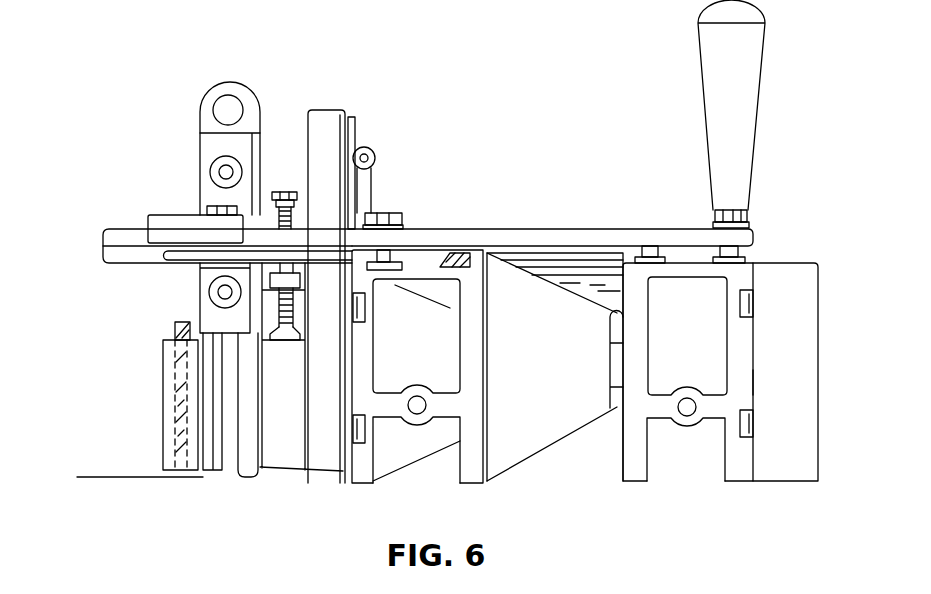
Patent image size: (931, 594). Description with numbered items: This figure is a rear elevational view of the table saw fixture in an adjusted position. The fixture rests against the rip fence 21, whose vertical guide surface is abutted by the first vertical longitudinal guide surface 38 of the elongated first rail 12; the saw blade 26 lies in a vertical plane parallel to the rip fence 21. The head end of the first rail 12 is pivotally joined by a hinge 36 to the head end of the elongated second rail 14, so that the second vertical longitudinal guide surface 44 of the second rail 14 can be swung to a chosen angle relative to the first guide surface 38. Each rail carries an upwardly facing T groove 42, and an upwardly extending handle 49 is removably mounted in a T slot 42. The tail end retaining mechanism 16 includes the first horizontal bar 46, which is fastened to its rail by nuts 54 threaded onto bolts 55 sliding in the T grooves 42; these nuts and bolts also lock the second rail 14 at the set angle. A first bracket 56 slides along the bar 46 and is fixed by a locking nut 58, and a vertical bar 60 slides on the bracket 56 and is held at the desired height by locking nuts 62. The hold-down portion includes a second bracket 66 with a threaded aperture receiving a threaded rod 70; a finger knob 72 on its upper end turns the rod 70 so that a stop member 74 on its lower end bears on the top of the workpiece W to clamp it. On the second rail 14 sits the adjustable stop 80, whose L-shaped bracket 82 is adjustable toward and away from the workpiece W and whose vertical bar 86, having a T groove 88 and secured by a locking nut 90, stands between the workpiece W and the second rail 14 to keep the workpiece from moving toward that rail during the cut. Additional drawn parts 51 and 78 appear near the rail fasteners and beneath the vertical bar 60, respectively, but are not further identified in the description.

The first rail 12 is at (692, 459).
The second rail 14 is at (527, 478).
The tail end retaining mechanism 16 is at (130, 425).
The rip fence 21 is at (798, 277).
The blade 26 is at (175, 327).
The hinge 36 is at (617, 407).
The first vertical longitudinal guide surface 38 is at (753, 381).
The T groove 42 is at (467, 260).
The second vertical longitudinal guide surface 44 is at (348, 483).
The first horizontal bar 46 is at (753, 230).
The handle 49 is at (718, 85).
The T-slot nut 51 is at (740, 255).
The nut 54 is at (400, 215).
The bolt 55 is at (382, 268).
The first bracket 56 is at (158, 222).
The locking nut 58 is at (197, 200).
The vertical bar 60 is at (218, 88).
The locking nut 62 is at (215, 165).
The second bracket 66 is at (277, 281).
The threaded rod 70 is at (283, 218).
The finger knob 72 is at (283, 190).
The stop member 74 is at (280, 340).
The guide rods 78 is at (213, 468).
The adjustable stop 80 is at (376, 246).
The L-shaped bracket 82 is at (365, 177).
The vertical bar 86 is at (323, 115).
The T groove 88 is at (353, 125).
The locking nut 90 is at (370, 151).
The workpiece W is at (287, 463).